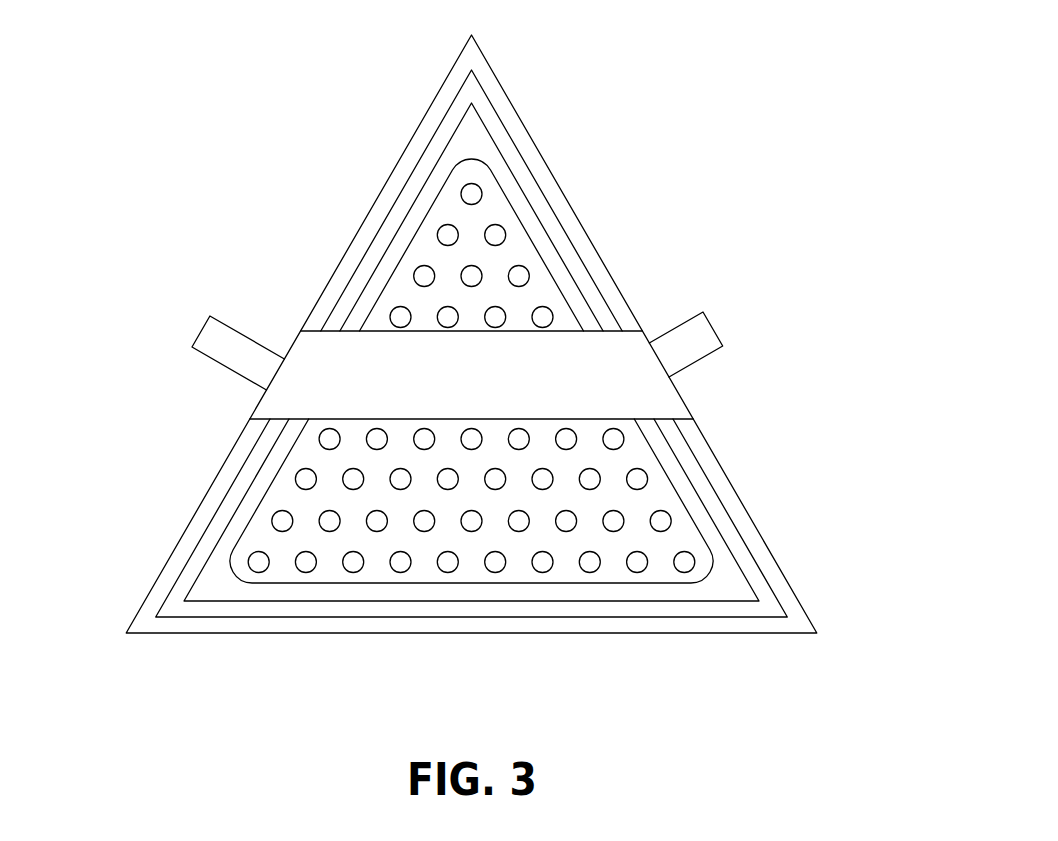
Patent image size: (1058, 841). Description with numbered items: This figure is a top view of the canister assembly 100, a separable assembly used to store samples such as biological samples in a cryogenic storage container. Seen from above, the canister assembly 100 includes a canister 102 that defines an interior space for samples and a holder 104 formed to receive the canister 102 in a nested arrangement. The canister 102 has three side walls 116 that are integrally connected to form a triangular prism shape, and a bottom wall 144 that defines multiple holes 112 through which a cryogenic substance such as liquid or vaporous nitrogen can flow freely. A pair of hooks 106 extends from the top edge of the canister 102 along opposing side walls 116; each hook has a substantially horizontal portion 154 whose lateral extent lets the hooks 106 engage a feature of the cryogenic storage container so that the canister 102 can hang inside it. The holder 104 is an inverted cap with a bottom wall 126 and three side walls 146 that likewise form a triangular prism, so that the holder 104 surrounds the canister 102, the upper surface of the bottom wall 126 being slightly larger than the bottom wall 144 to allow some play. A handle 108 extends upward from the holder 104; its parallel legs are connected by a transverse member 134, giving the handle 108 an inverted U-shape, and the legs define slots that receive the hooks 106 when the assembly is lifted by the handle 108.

The canister assembly 100 is at (277, 46).
The canister 102 is at (471, 352).
The side walls 116 is at (403, 245).
The holder 104 is at (542, 334).
The side walls 146 is at (768, 570).
The hooks 106 is at (450, 345).
The horizontal portion 154 is at (212, 338).
The handle 108 is at (491, 317).
The transverse member 134 is at (466, 365).
The holes 112 is at (306, 562).
The bottom wall 126 is at (713, 502).
The bottom wall 144 is at (497, 210).